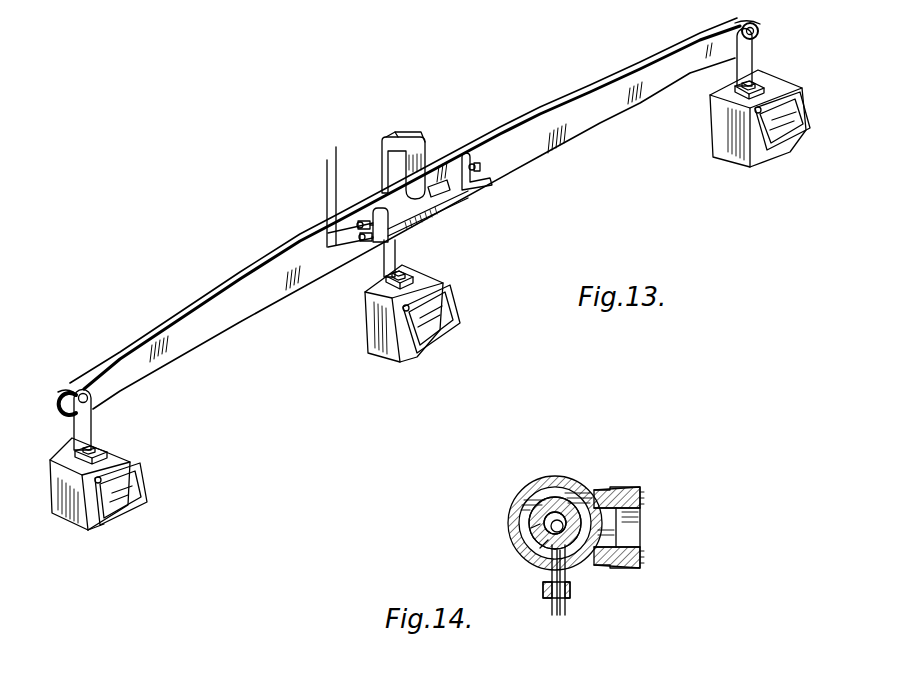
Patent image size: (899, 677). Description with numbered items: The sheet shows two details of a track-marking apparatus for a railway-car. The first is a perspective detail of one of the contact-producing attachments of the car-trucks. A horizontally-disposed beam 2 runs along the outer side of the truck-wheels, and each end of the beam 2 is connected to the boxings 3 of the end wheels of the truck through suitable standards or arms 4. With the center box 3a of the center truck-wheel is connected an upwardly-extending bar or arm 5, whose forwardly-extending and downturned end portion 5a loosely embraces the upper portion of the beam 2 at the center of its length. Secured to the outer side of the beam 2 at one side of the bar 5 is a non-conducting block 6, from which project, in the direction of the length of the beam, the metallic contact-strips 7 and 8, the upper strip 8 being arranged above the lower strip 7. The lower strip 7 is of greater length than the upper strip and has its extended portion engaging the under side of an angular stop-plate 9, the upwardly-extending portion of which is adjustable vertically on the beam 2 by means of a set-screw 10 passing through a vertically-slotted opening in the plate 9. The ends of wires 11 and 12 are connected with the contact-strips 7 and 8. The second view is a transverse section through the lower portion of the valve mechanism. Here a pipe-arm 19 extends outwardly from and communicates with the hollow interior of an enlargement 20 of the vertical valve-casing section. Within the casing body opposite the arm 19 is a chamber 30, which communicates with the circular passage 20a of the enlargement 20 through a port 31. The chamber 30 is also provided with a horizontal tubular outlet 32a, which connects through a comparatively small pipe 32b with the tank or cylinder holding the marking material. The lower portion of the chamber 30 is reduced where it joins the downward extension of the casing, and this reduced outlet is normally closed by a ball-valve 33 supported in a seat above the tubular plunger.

In FIG. 13, the beam 2 is at (330, 275).
In FIG. 13, the boxings 3 is at (112, 455).
In FIG. 13, the center box 3a is at (423, 282).
In FIG. 13, the standards or arms 4 is at (91, 438).
In FIG. 13, the upwardly-extending bar or arm 5 is at (396, 252).
In FIG. 13, the downturned end portion 5a is at (384, 158).
In FIG. 13, the non-conducting block 6 is at (376, 212).
In FIG. 13, the lower contact-strip 7 is at (458, 193).
In FIG. 13, the upper contact-strip 8 is at (433, 185).
In FIG. 13, the angular stop-plate 9 is at (468, 168).
In FIG. 13, the set-screw 10 is at (478, 170).
In FIG. 13, the wire 11 is at (330, 236).
In FIG. 13, the wire 12 is at (335, 183).
In FIG. 14, the pipe-arm 19 is at (642, 498).
In FIG. 14, the enlargement 20 is at (562, 480).
In FIG. 14, the circular passage 20a is at (576, 503).
In FIG. 14, the chamber 30 is at (566, 516).
In FIG. 14, the port 31 is at (531, 528).
In FIG. 14, the ball-valve 33 is at (541, 548).
In FIG. 14, the tubular outlet 32a is at (571, 588).
In FIG. 14, the pipe 32b is at (556, 606).